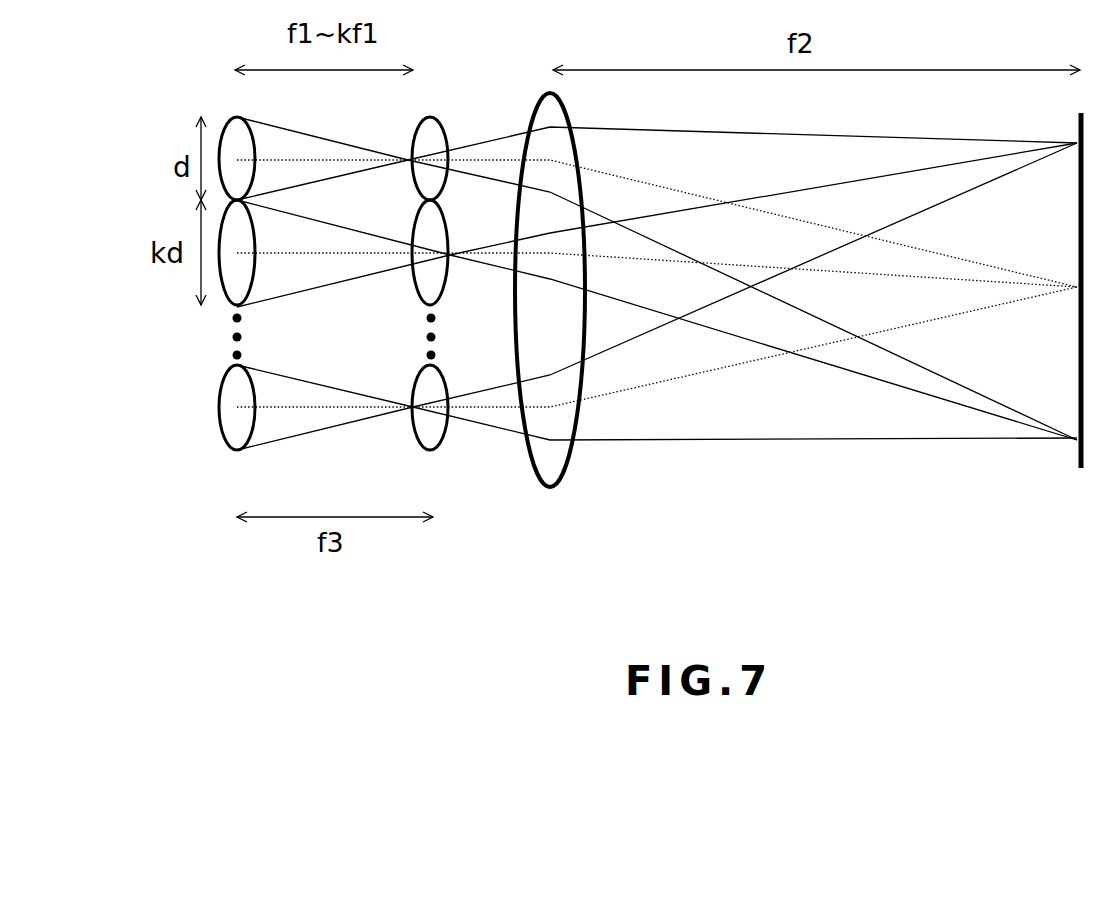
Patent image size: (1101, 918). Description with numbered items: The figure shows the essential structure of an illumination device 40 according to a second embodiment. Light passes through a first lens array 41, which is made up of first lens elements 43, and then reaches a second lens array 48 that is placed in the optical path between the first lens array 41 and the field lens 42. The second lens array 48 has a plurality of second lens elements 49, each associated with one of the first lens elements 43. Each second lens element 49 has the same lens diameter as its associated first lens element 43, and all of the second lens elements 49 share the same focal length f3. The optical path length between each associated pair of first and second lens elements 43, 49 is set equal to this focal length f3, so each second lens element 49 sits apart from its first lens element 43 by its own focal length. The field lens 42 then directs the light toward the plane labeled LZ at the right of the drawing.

The illumination device 40 is at (325, 393).
The first lens array 41 is at (198, 323).
The first lens element 43 is at (242, 420).
The second lens array 48 is at (423, 319).
The second lens element 49 is at (423, 435).
The field lens 42 is at (553, 468).
The illumination plane LZ is at (1078, 473).